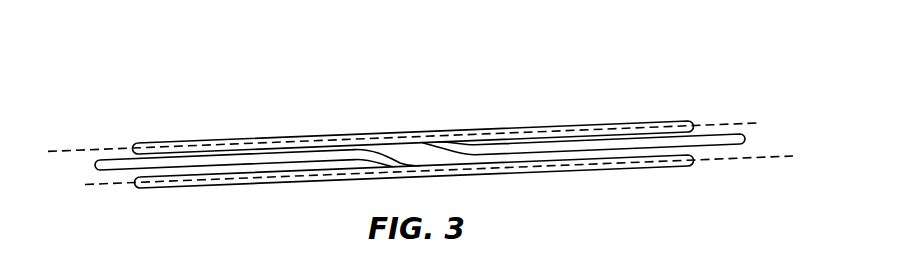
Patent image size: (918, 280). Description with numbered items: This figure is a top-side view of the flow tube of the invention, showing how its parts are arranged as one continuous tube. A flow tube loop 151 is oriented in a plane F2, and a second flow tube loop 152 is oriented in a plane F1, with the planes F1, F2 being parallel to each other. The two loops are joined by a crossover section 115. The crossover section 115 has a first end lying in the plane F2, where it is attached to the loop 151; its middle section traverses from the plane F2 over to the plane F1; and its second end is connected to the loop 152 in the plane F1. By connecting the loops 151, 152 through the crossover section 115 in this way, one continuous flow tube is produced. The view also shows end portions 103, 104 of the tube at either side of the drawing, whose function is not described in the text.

The optical fiber (input end) 103 is at (92, 164).
The optical fiber (output end) 104 is at (745, 140).
The crossover section 115 is at (418, 143).
The flow tube loop 151 is at (277, 187).
The flow tube loop 152 is at (472, 132).
The plane F1 is at (113, 148).
The plane F2 is at (110, 185).